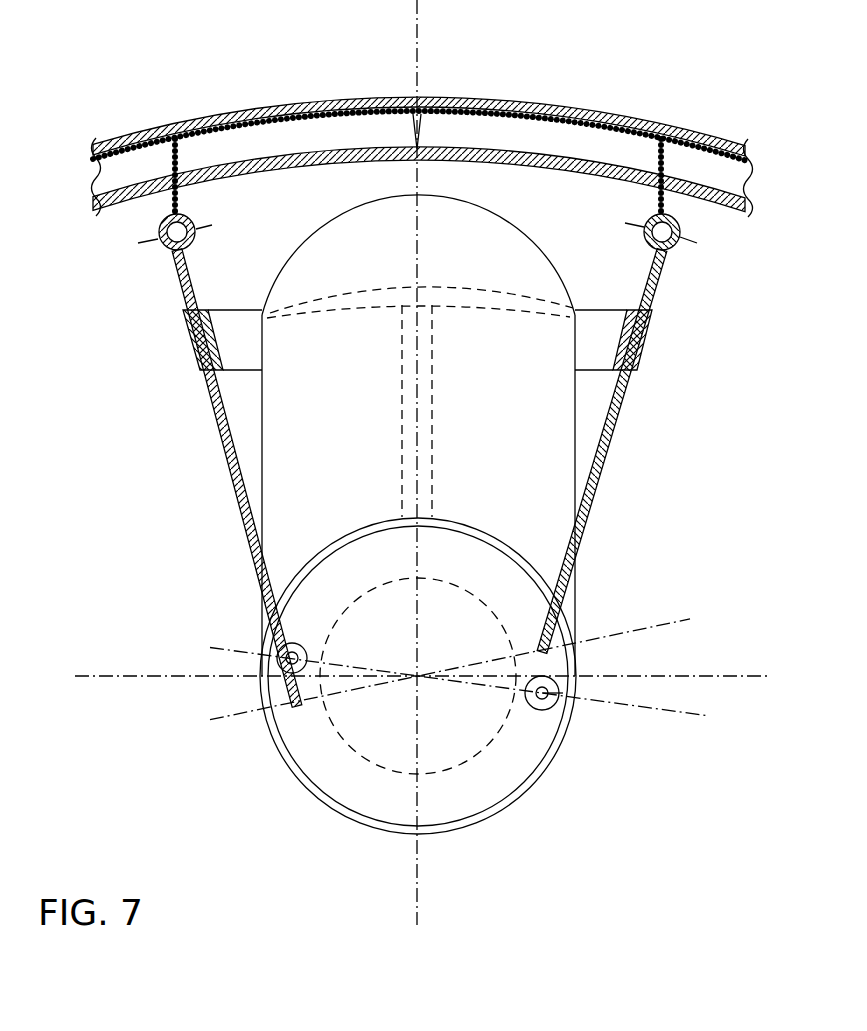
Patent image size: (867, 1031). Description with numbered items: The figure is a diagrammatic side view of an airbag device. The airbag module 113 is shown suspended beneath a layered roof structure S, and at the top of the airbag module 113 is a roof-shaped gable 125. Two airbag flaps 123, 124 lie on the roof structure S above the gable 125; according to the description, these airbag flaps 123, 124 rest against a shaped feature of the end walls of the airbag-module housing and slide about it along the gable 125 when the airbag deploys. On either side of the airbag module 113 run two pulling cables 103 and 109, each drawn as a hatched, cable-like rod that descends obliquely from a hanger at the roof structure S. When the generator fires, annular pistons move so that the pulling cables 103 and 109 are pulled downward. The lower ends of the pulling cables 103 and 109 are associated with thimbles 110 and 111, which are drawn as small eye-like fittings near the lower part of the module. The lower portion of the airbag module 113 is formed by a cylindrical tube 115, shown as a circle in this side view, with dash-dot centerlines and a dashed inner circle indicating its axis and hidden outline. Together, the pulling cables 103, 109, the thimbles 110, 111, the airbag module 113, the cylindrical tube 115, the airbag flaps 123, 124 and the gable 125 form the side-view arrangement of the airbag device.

The ceiling structure S is at (248, 98).
The airbag flap 123 is at (362, 99).
The airbag flap 124 is at (512, 108).
The gable 125 is at (525, 243).
The airbag module 113 is at (277, 428).
The pulling cable 103 is at (238, 478).
The pulling cable 109 is at (597, 478).
The thimble 110 is at (295, 645).
The thimble 111 is at (545, 705).
The cylindrical tube 115 is at (300, 782).